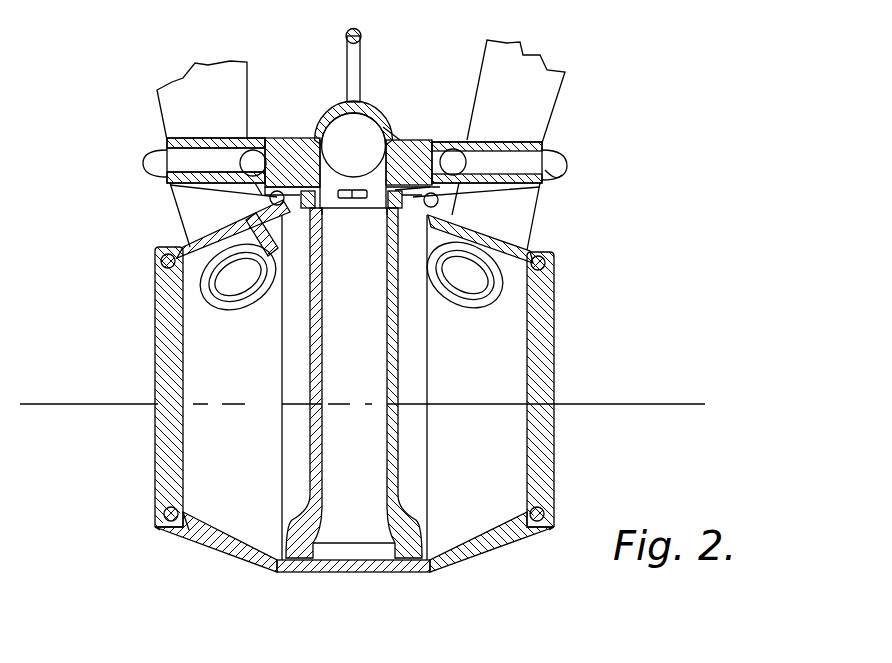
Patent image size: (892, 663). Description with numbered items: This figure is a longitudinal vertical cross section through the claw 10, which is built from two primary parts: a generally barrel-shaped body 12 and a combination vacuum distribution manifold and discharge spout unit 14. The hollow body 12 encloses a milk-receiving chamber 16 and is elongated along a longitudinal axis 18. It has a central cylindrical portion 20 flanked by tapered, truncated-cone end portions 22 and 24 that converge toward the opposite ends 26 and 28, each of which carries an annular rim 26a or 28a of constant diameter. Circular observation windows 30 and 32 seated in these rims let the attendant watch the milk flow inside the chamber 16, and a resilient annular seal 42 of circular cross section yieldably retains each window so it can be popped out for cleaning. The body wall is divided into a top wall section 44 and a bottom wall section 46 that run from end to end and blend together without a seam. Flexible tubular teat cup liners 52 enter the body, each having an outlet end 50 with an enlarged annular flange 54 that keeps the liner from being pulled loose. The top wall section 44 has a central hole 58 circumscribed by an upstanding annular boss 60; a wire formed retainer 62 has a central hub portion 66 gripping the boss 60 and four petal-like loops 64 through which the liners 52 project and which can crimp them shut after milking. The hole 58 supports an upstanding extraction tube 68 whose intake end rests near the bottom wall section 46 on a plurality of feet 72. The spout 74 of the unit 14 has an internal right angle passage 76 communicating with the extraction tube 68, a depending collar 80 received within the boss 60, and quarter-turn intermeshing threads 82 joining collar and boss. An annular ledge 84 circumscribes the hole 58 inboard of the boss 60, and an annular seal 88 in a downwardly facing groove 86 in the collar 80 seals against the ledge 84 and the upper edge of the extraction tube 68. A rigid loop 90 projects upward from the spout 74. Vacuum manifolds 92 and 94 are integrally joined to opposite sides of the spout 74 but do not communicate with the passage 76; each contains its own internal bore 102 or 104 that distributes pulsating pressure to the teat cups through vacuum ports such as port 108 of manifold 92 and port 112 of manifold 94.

The claw 10 is at (700, 165).
The body 12 is at (563, 248).
The combination vacuum distribution manifold and discharge spout unit 14 is at (403, 128).
The milk-receiving chamber 16 is at (457, 508).
The longitudinal axis 18 is at (678, 396).
The central cylindrical portion 20 is at (361, 579).
The tapered end portion 22 is at (213, 546).
The tapered end portion 24 is at (506, 544).
The end of the body 26 is at (152, 527).
The annular rim 26a is at (152, 533).
The end of the body 28 is at (560, 523).
The annular rim 28a is at (546, 532).
The observation window 30 is at (158, 340).
The observation window 32 is at (556, 352).
The annular seal 42 is at (160, 263).
The top wall section 44 is at (172, 244).
The bottom wall section 46 is at (184, 540).
The outlet end of teat cup liner 50 is at (247, 314).
The teat cup liner 52 is at (163, 115).
The annular flange 54 is at (197, 290).
The hole 58 is at (320, 238).
The annular boss 60 is at (425, 195).
The wire formed retainer 62 is at (574, 158).
The petal-like loop 64 is at (556, 176).
The hub portion 66 is at (428, 202).
The extraction tube 68 is at (320, 362).
The feet 72 is at (420, 578).
The spout 74 is at (377, 112).
The right angle passage 76 is at (340, 125).
The collar 80 is at (382, 200).
The intermeshing threads 82 is at (250, 195).
The annular ledge 84 is at (308, 212).
The annular groove 86 is at (312, 153).
The annular seal 88 is at (327, 196).
The rigid loop 90 is at (362, 55).
The vacuum manifold 92 is at (280, 137).
The vacuum manifold 94 is at (433, 140).
The internal bore 102 is at (208, 137).
The internal bore 104 is at (458, 163).
The vacuum port 108 is at (153, 143).
The vacuum port 112 is at (515, 146).